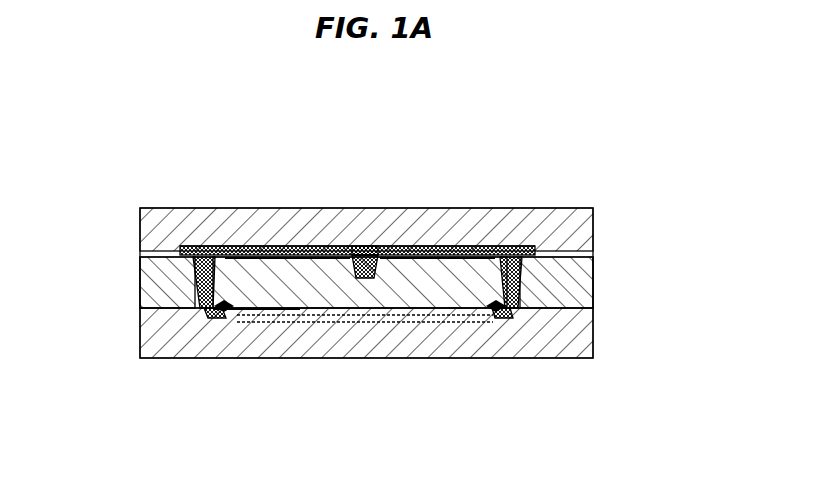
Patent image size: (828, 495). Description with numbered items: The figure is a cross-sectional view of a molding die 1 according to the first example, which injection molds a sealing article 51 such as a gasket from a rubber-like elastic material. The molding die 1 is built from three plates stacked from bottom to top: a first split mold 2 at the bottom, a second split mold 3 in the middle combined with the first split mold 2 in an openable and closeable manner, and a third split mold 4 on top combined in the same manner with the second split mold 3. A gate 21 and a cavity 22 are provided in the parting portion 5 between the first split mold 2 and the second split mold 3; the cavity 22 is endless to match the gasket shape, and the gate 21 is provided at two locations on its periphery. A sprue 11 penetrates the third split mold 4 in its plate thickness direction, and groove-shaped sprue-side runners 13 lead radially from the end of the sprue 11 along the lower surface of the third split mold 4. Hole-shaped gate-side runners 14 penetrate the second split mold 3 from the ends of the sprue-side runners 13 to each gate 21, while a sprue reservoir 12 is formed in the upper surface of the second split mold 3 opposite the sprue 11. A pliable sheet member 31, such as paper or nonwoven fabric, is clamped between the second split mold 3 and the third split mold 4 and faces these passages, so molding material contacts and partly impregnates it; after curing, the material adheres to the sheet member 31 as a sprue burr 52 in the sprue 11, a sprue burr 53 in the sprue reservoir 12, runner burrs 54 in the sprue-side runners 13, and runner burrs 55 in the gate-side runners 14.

The molding die 1 is at (596, 194).
The first split mold 2 is at (140, 357).
The second split mold 3 is at (140, 300).
The third split mold 4 is at (140, 238).
The parting portion 5 is at (140, 340).
The sprue 11 is at (363, 255).
The sprue reservoir 12 is at (340, 308).
The sprue-side runners 13 is at (335, 257).
The gate-side runners 14 is at (140, 262).
The gate 21 is at (205, 312).
The cavity 22 is at (220, 314).
The sheet member 31 is at (492, 246).
The sealing article 51 is at (237, 316).
The sprue burr 52 is at (380, 246).
The sprue burr 53 is at (360, 322).
The runner burrs 54 is at (292, 246).
The runner burrs 55 is at (198, 283).